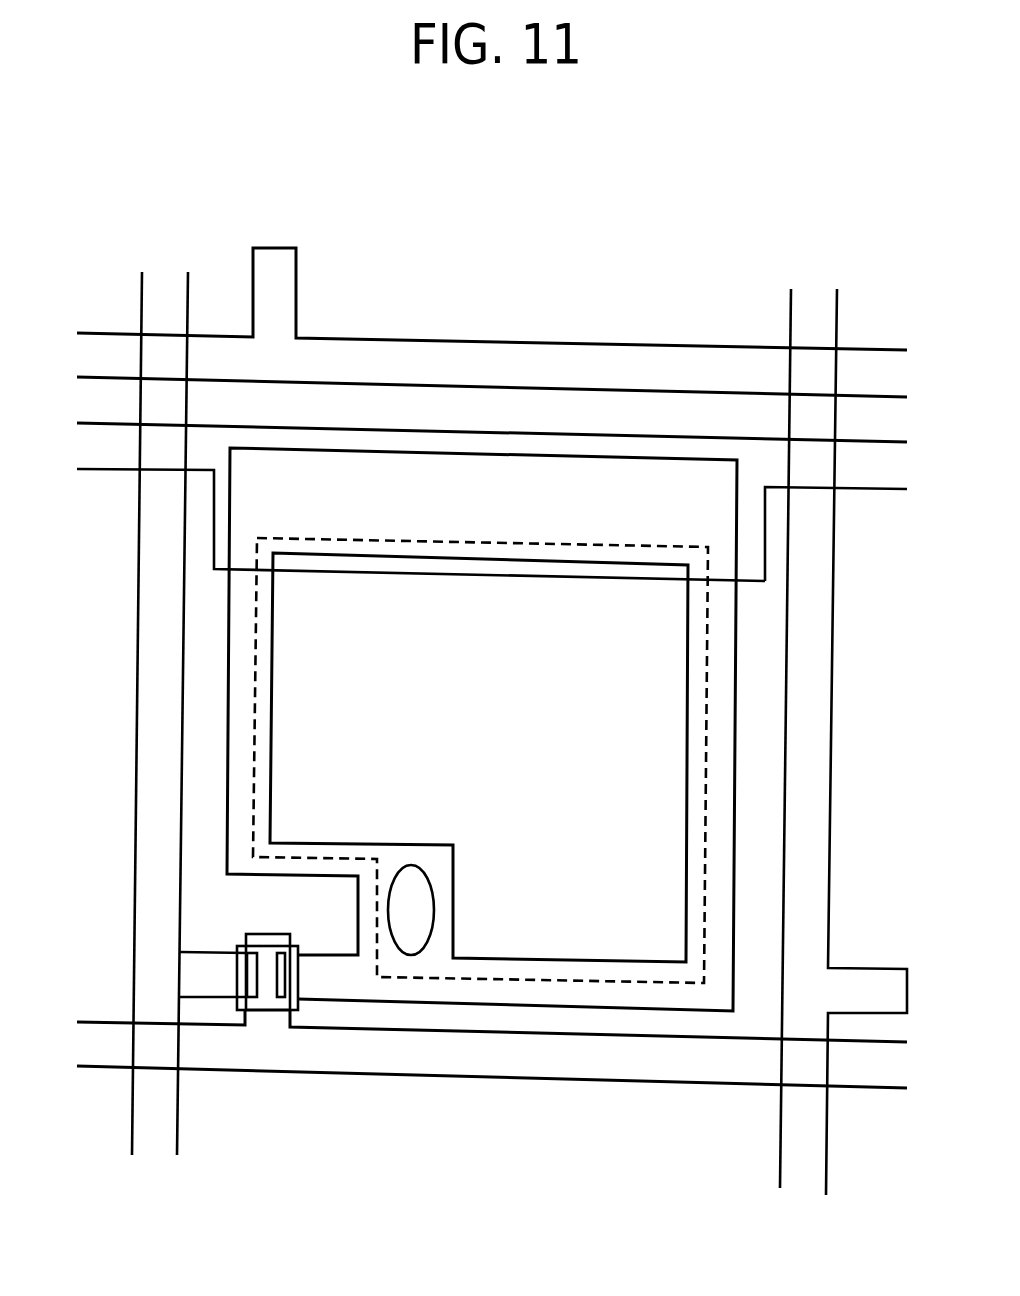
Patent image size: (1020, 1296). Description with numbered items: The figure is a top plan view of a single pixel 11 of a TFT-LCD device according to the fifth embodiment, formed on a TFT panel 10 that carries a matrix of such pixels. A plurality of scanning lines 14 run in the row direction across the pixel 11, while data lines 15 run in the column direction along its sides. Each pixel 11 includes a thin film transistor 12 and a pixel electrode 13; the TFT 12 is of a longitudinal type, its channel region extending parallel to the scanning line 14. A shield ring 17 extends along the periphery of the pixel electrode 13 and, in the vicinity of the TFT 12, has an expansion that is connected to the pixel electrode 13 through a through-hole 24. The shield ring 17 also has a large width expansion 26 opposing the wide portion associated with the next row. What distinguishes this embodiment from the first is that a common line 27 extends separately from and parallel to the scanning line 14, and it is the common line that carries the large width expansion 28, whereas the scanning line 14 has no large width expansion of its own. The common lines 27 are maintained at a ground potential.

The TFT panel 10 is at (680, 225).
The pixel 11 is at (584, 335).
The thin film transistor 12 is at (308, 1008).
The pixel electrode 13 is at (708, 724).
The scanning line 14 is at (878, 350).
The data line 15 is at (136, 740).
The shield ring 17 is at (737, 668).
The through-hole 24 is at (410, 956).
The large width expansion 26 is at (605, 566).
The common line 27 is at (865, 489).
The large width expansion 28 is at (214, 537).